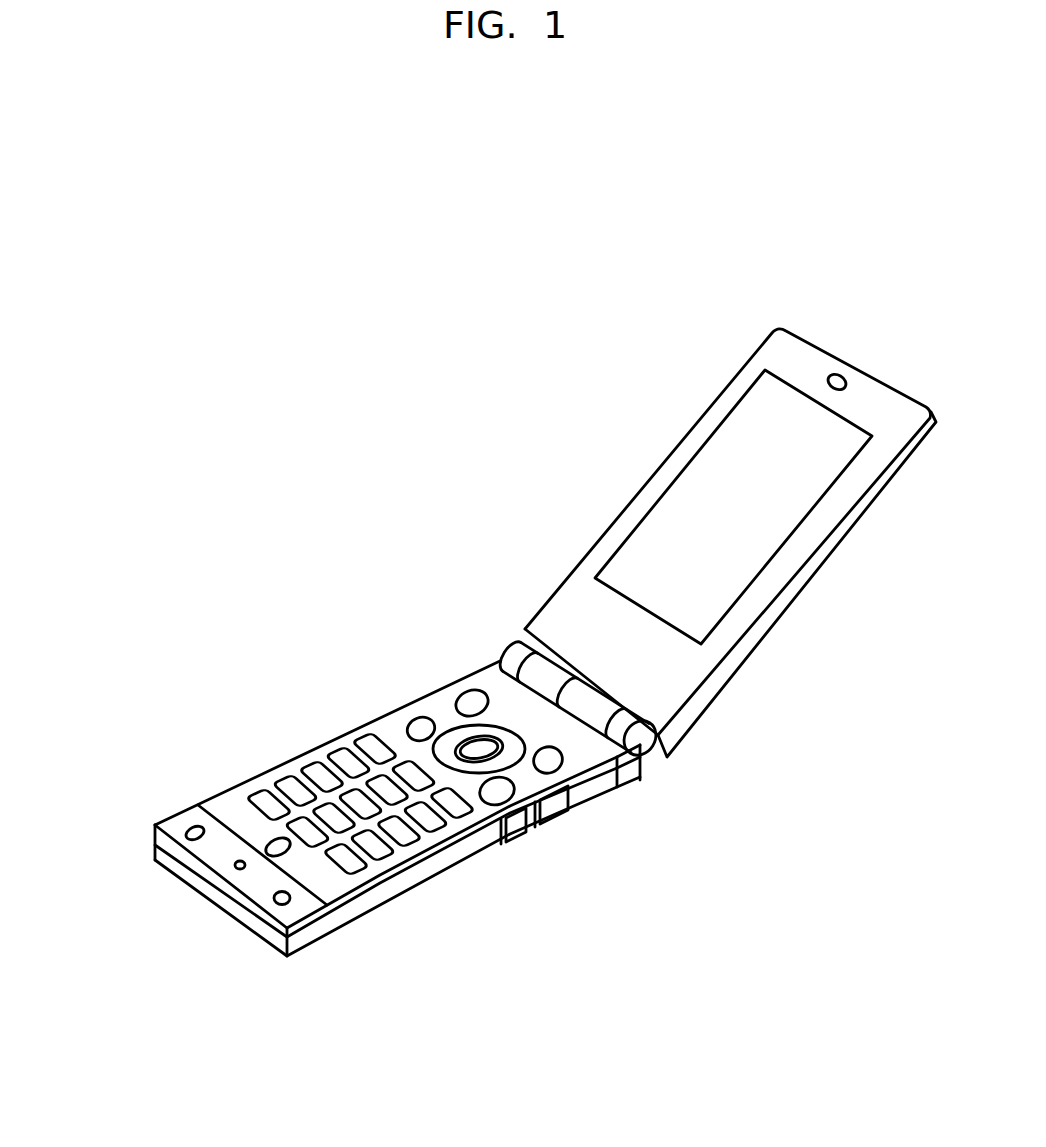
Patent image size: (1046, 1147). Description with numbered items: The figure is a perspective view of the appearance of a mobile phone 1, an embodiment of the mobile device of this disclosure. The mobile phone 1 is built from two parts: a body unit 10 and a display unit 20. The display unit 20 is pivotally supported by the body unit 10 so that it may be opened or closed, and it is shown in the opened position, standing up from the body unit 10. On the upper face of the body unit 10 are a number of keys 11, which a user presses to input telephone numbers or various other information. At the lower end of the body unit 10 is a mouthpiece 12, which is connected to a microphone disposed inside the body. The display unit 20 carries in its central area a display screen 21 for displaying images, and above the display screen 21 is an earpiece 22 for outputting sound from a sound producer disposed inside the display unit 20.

The mobile phone 1 is at (442, 302).
The body unit 10 is at (286, 669).
The keys 11 is at (377, 716).
The mouthpiece 12 is at (235, 862).
The display unit 20 is at (664, 367).
The display screen 21 is at (669, 481).
The earpiece 22 is at (833, 375).